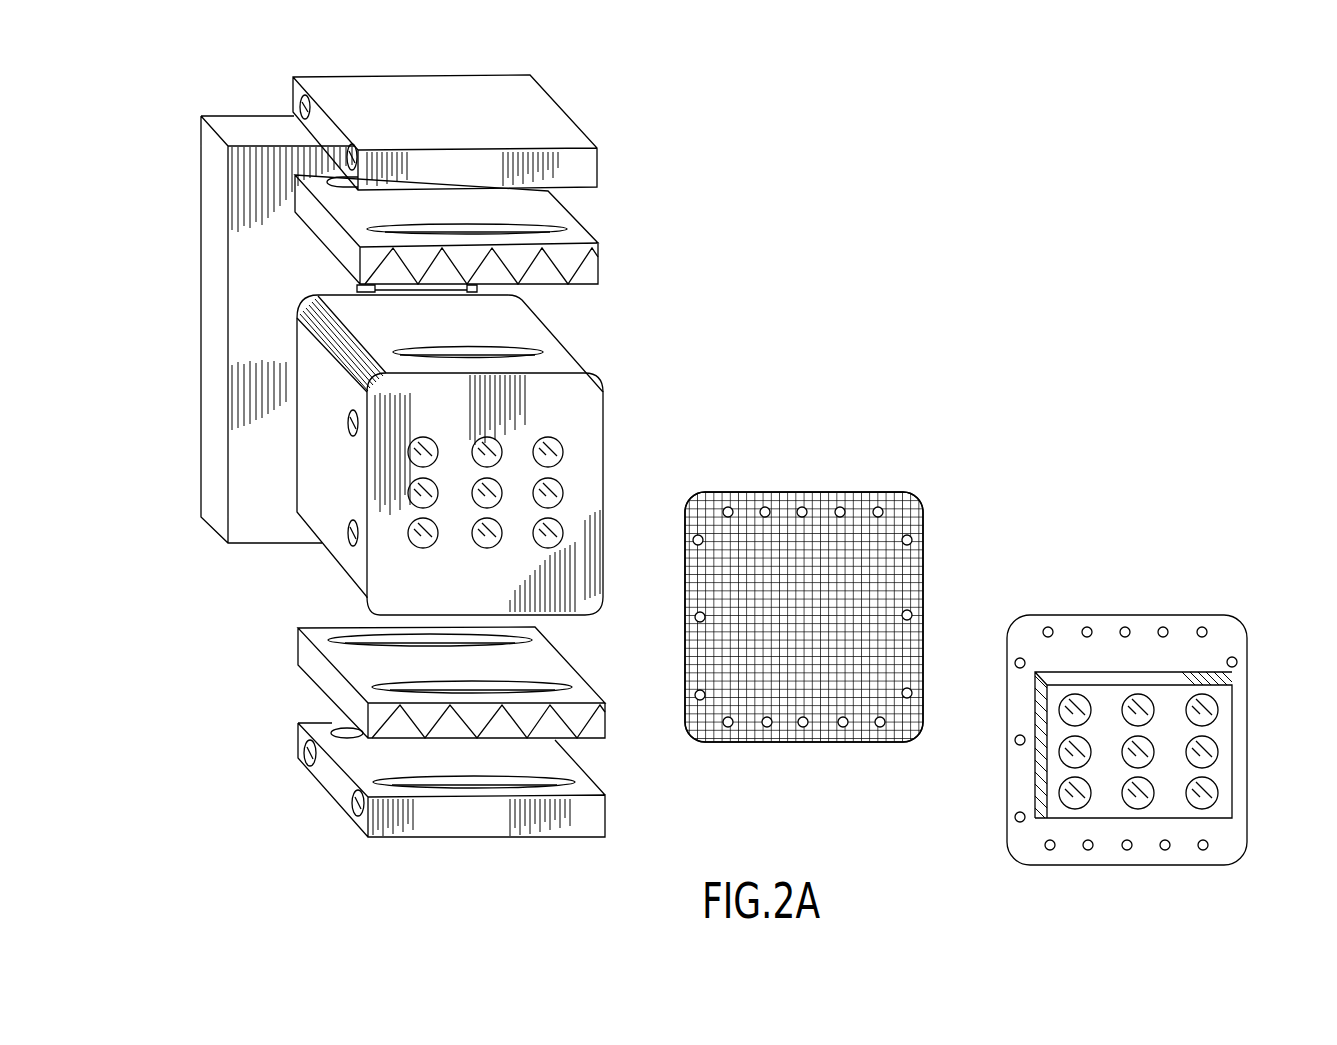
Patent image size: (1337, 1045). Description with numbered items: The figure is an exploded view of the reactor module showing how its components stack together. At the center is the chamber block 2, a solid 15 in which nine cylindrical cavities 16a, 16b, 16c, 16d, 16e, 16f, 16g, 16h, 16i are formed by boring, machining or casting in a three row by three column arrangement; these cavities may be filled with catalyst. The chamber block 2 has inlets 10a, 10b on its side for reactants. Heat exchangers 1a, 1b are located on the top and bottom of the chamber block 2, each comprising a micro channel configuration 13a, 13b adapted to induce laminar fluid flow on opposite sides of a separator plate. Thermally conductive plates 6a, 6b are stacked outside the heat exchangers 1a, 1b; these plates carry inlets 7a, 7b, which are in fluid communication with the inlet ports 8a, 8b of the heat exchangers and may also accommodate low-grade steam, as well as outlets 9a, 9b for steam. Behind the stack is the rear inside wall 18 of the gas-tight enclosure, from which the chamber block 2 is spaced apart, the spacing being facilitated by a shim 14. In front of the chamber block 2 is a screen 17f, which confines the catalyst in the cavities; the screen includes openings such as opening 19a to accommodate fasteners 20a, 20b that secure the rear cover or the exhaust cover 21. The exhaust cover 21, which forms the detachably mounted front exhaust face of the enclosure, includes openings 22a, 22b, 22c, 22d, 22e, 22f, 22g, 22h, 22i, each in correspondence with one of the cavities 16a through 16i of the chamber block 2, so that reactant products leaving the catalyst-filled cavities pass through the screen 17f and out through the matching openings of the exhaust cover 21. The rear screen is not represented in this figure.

The heat exchanger 1a is at (603, 263).
The heat exchanger 1b is at (603, 712).
The chamber block 2 is at (593, 377).
The thermally conductive plate 6a is at (523, 102).
The thermally conductive plate 6b is at (465, 838).
The inlet 7a is at (345, 155).
The inlet 7b is at (352, 806).
The inlet port 8a is at (470, 227).
The inlet port 8b is at (503, 683).
The outlet 9a is at (298, 103).
The outlet 9b is at (304, 757).
The inlet 10a is at (347, 423).
The inlet 10b is at (347, 533).
The micro channel configuration 13a is at (602, 287).
The micro channel configuration 13b is at (603, 735).
The shim 14 is at (383, 293).
The solid 15 is at (603, 547).
The cavity 16a is at (423, 440).
The cavity 16b is at (487, 438).
The cavity 16c is at (551, 438).
The cavity 16d is at (410, 488).
The cavity 16e is at (497, 482).
The cavity 16f is at (561, 488).
The cavity 16g is at (423, 548).
The cavity 16h is at (487, 548).
The cavity 16i is at (561, 527).
The screen 17f is at (767, 700).
The rear inside wall 18 is at (201, 334).
The opening 19a is at (878, 505).
The fastener 20a is at (1047, 627).
The fastener 20b is at (1015, 661).
The exhaust cover 21 is at (1097, 833).
The opening 22a is at (1065, 704).
The opening 22b is at (1134, 694).
The opening 22c is at (1198, 694).
The opening 22d is at (1063, 756).
The opening 22e is at (1150, 745).
The opening 22f is at (1212, 757).
The opening 22g is at (1063, 803).
The opening 22h is at (1143, 805).
The opening 22i is at (1212, 797).